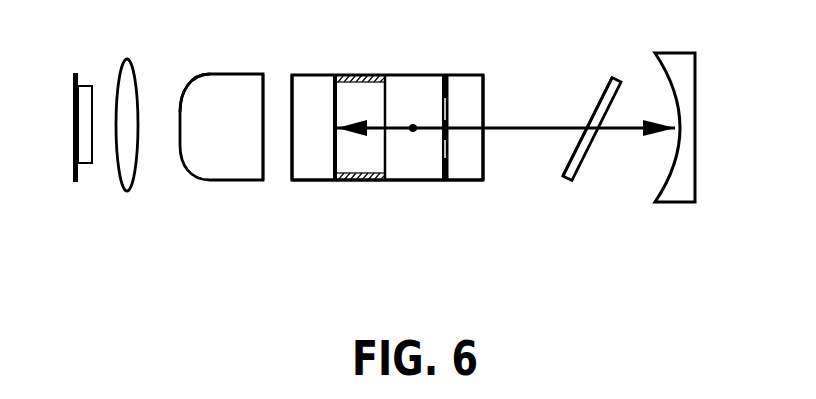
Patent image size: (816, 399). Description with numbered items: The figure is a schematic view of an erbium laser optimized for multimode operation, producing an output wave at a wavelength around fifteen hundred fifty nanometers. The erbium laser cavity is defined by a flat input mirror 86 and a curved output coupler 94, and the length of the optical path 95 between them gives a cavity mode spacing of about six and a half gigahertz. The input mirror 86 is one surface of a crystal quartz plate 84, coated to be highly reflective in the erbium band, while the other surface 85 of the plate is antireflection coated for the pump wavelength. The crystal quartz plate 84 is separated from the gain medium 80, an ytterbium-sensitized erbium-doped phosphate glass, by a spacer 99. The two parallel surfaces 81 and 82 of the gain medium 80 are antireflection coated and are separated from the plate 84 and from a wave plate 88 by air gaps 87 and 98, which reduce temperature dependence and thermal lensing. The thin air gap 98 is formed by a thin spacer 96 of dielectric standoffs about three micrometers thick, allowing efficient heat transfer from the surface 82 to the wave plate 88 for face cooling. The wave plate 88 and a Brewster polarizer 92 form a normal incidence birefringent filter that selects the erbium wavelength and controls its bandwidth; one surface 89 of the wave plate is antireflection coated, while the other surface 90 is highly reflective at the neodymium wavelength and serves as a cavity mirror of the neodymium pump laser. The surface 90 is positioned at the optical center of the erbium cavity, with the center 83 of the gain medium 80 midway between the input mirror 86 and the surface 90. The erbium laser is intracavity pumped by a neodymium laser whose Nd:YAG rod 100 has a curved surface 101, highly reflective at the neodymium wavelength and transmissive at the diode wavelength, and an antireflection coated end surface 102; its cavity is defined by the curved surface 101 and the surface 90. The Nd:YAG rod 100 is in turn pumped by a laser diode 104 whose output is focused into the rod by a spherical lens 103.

The gain medium 80 is at (423, 167).
The surface of the gain medium 81 is at (388, 90).
The surface of the gain medium 82 is at (438, 103).
The center of the erbium glass gain medium 83 is at (409, 143).
The crystal quartz plate 84 is at (317, 90).
The surface of the crystal quartz plate 85 is at (290, 153).
The input mirror 86 is at (332, 158).
The air gap 87 is at (367, 160).
The wave plate 88 is at (470, 160).
The surface of the wave plate 89 is at (452, 100).
The surface of the wave plate 90 is at (488, 93).
The Brewster polarizer 92 is at (577, 181).
The output coupler 94 is at (658, 190).
The optical path 95 is at (567, 123).
The thin spacer 96 is at (445, 190).
The thin air gap 98 is at (450, 143).
The spacer 99 is at (353, 75).
The Nd:YAG rod 100 is at (228, 93).
The curved surface of the Nd:YAG rod 101 is at (188, 82).
The end surface of the Nd:YAG rod 102 is at (262, 153).
The spherical lens 103 is at (128, 188).
The laser diode 104 is at (83, 148).